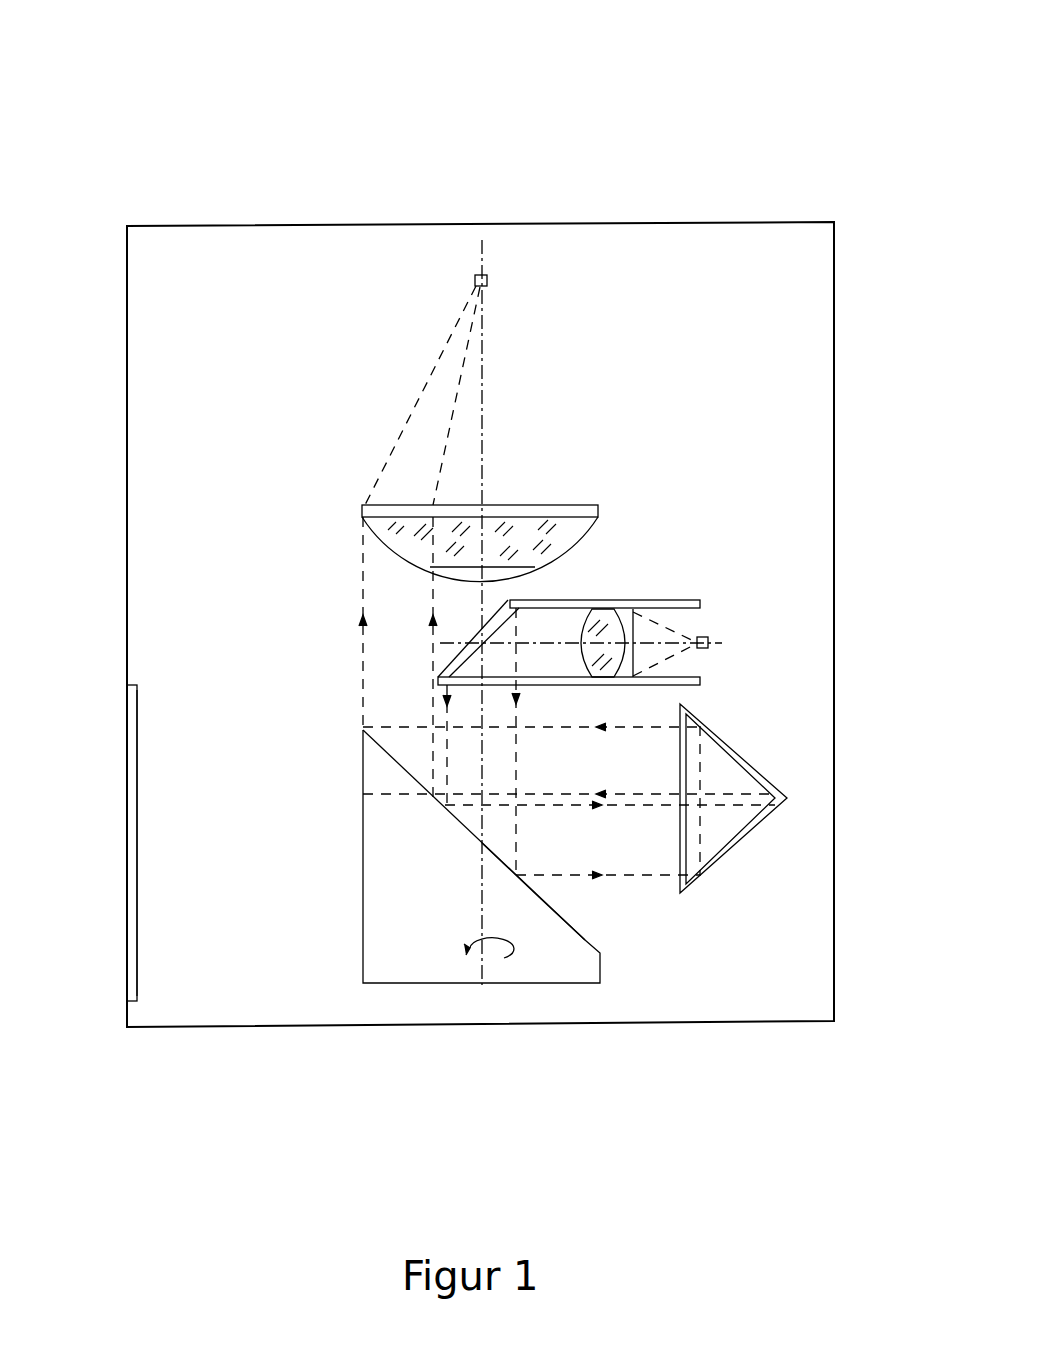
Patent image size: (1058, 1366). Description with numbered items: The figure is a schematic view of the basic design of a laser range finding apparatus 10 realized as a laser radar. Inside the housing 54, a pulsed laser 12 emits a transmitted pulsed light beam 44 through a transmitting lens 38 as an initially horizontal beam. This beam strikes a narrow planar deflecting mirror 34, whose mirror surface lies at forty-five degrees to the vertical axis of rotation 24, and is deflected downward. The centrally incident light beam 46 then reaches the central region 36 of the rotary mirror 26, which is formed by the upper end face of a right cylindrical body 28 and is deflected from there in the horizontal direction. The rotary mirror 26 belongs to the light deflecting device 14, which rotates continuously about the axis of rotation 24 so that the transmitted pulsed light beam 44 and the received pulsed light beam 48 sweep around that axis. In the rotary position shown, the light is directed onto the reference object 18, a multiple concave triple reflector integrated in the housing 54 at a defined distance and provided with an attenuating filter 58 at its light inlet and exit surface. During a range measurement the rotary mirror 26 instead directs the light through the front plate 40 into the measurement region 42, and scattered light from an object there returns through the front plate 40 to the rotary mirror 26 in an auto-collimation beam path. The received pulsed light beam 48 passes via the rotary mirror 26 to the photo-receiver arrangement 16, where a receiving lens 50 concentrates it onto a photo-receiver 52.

The laser range finding apparatus 10 is at (545, 112).
The pulsed laser 12 is at (710, 641).
The light deflecting device 14 is at (567, 897).
The photo-receiver arrangement 16 is at (438, 520).
The reference object 18 is at (806, 788).
The axis of rotation 24 is at (482, 912).
The rotary mirror 26 is at (407, 780).
The right cylindrical body 28 is at (605, 886).
The deflecting mirror 34 is at (605, 342).
The central region 36 is at (482, 843).
The transmitting lens 38 is at (603, 622).
The front plate 40 is at (130, 746).
The measurement region 42 is at (72, 787).
The transmitted pulsed light beam 44 is at (458, 712).
The centrally incident light beam 46 is at (470, 765).
The received pulsed light beam 48 is at (397, 595).
The receiving lens 50 is at (415, 527).
The photo-receiver 52 is at (473, 285).
The housing 54 is at (352, 226).
The attenuating filter 58 is at (683, 775).